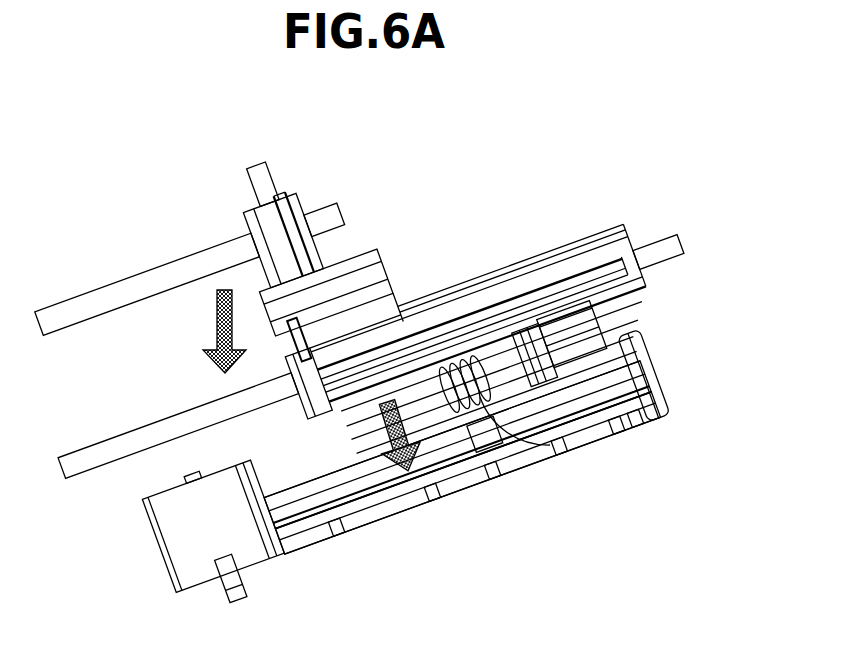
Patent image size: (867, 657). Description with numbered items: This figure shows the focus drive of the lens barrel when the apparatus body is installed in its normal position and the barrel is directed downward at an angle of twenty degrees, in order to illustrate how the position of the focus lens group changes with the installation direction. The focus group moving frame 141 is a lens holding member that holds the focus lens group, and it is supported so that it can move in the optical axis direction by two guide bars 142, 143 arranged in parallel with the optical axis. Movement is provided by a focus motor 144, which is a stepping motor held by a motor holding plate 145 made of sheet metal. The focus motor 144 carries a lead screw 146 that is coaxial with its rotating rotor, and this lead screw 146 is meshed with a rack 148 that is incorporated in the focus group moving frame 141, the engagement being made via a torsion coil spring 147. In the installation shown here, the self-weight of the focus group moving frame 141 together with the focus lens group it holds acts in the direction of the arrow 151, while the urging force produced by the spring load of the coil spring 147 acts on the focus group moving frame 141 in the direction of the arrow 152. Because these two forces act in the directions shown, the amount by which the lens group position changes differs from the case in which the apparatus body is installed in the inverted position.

The focus group moving frame 141 is at (255, 166).
The guide bar 142 is at (330, 186).
The guide bar 143 is at (655, 238).
The focus motor 144 is at (256, 566).
The motor holding plate 145 is at (444, 500).
The lead screw 146 is at (356, 494).
The torsion coil spring 147 is at (543, 422).
The rack 148 is at (490, 450).
The arrow 151 is at (216, 330).
The arrow 152 is at (378, 425).